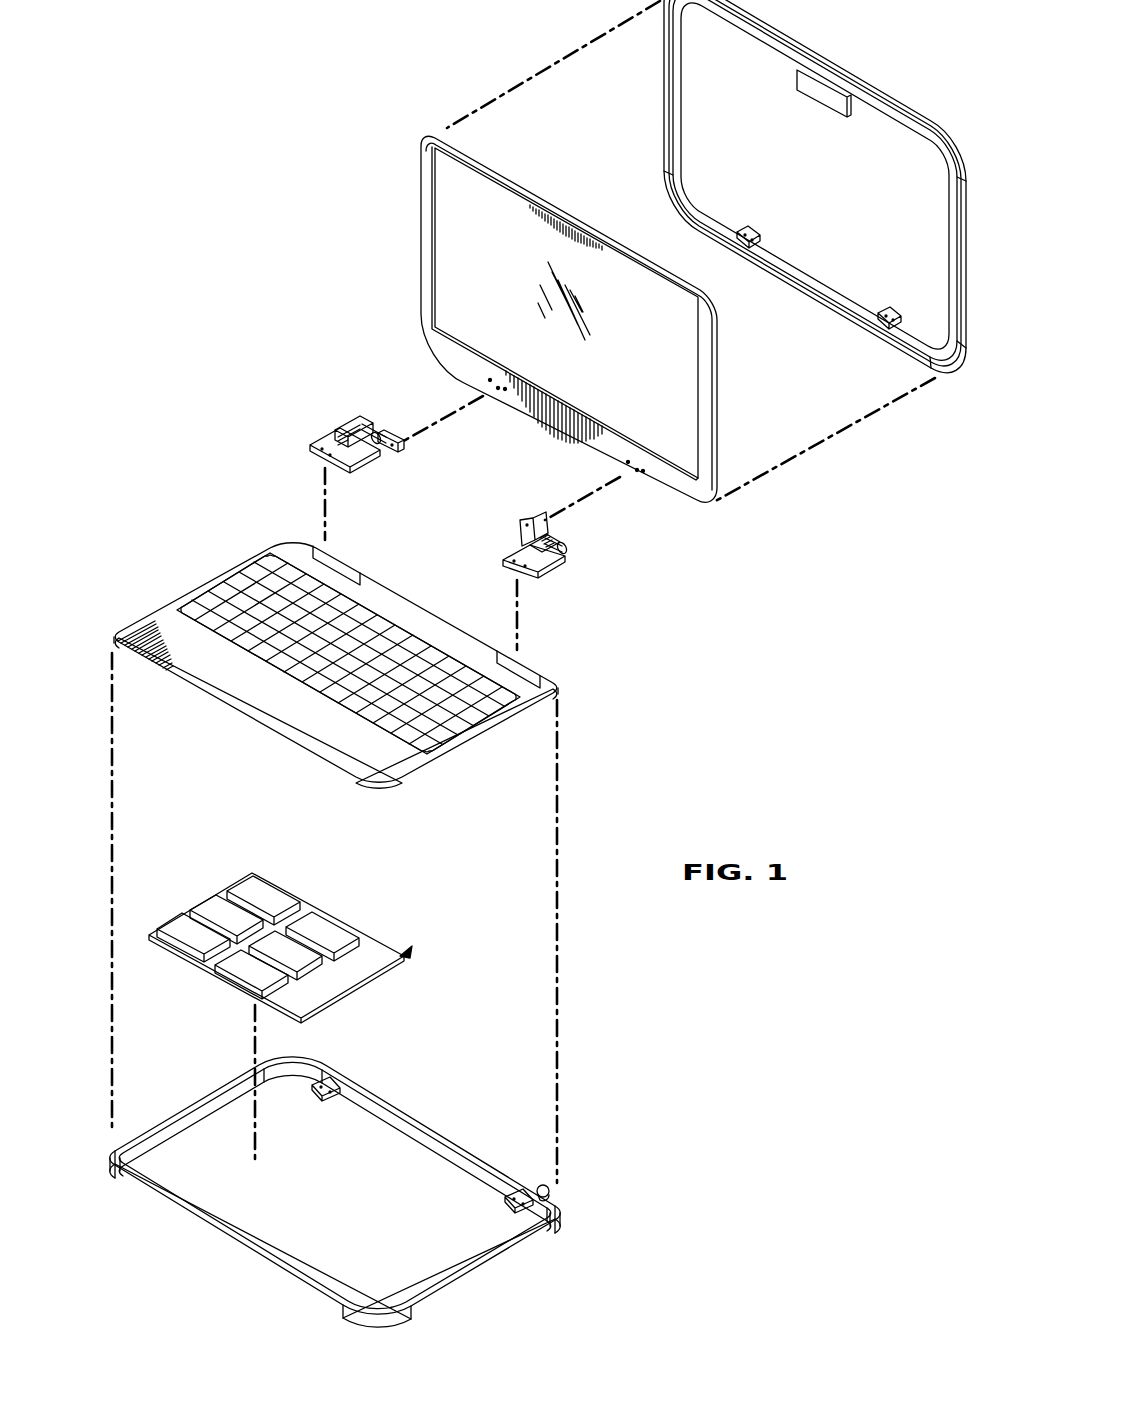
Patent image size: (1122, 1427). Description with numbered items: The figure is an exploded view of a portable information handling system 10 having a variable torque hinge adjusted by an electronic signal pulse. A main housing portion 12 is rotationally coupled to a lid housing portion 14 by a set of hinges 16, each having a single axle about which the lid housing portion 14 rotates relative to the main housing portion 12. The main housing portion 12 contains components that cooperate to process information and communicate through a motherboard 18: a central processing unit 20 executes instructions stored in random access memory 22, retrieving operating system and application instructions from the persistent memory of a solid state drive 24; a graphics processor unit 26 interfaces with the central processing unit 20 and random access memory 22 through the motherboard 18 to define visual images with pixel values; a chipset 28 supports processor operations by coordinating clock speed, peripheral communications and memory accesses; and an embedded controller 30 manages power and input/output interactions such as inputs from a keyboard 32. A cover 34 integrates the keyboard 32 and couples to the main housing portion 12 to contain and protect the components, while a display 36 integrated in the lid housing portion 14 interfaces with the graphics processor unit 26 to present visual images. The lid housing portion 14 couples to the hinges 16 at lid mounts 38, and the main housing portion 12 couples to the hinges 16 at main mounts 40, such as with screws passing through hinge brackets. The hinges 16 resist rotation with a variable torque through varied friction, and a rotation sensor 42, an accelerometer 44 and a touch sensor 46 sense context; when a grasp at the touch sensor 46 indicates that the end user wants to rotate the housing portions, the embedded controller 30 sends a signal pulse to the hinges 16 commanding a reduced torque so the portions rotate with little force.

The portable information handling system 10 is at (203, 112).
The main housing portion 12 is at (160, 1212).
The lid housing portion 14 is at (898, 104).
The hinge 16 is at (566, 590).
The motherboard 18 is at (332, 927).
The central processing unit 20 is at (262, 891).
The random access memory 22 is at (212, 906).
The solid state drive 24 is at (200, 946).
The graphics processor unit 26 is at (313, 923).
The chipset 28 is at (305, 960).
The embedded controller 30 is at (252, 976).
The keyboard 32 is at (248, 582).
The cover 34 is at (205, 582).
The display 36 is at (631, 391).
The lid mount 38 is at (768, 308).
The main mount 40 is at (322, 1096).
The rotation sensor 42 is at (550, 1190).
The accelerometer 44 is at (404, 953).
The touch sensor 46 is at (808, 102).